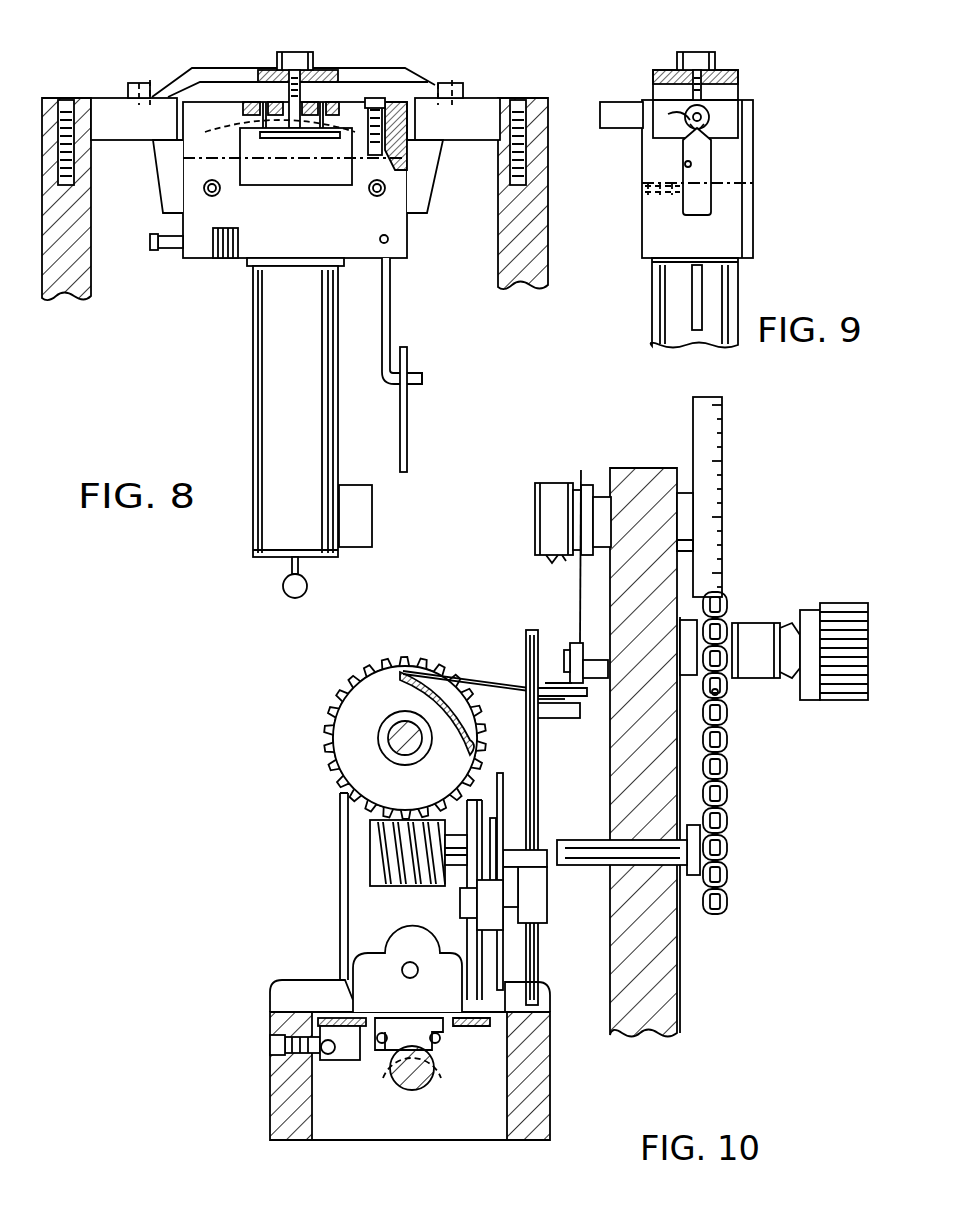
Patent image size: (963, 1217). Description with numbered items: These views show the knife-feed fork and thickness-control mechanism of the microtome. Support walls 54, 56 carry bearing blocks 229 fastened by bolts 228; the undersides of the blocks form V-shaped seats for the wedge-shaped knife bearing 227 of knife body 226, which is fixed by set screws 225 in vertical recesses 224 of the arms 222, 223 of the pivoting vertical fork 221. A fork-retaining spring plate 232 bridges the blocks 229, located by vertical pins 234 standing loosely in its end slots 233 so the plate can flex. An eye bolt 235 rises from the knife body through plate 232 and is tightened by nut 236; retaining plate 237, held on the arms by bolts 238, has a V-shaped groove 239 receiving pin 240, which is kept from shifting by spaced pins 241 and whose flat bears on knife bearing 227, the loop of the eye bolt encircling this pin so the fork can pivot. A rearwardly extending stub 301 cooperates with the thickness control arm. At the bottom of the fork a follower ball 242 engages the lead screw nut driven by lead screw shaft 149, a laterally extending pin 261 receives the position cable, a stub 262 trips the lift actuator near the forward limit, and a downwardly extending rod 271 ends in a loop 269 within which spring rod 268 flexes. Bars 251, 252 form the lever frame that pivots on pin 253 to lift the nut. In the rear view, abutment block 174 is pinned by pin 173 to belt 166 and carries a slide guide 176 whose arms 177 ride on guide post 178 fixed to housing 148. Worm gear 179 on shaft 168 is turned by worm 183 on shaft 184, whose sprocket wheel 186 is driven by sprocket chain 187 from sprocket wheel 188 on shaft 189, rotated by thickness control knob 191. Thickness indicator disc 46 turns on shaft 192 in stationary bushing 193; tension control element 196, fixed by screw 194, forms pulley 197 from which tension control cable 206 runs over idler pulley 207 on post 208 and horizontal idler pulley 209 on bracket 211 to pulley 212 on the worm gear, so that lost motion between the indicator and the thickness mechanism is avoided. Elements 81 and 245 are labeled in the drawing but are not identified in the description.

In FIG. 10, the thickness indicator disc 46 is at (718, 442).
In FIG. 8, the support wall 54 is at (80, 208).
In FIG. 10, the support wall 54 is at (675, 990).
In FIG. 8, the support wall 56 is at (535, 252).
In FIG. 10, the rod 81 is at (493, 818).
In FIG. 10, the housing 148 is at (282, 1075).
In FIG. 10, the lead screw shaft 149 is at (410, 1090).
In FIG. 10, the belt 166 is at (340, 835).
In FIG. 10, the shaft 168 is at (398, 742).
In FIG. 10, the pin 173 is at (460, 905).
In FIG. 10, the abutment block 174 is at (482, 922).
In FIG. 10, the slide guide 176 is at (520, 920).
In FIG. 10, the arms 177 is at (540, 867).
In FIG. 10, the vertical guide post 178 is at (540, 797).
In FIG. 10, the worm gear 179 is at (338, 690).
In FIG. 10, the worm 183 is at (400, 880).
In FIG. 10, the shaft 184 is at (598, 848).
In FIG. 10, the sprocket wheel 186 is at (715, 840).
In FIG. 10, the sprocket chain 187 is at (728, 760).
In FIG. 10, the sprocket wheel 188 is at (718, 693).
In FIG. 10, the shaft 189 is at (760, 625).
In FIG. 10, the thickness control knob 191 is at (840, 605).
In FIG. 10, the shaft 192 is at (686, 493).
In FIG. 10, the stationary bushing 193 is at (693, 545).
In FIG. 10, the screw 194 is at (548, 562).
In FIG. 10, the tension control element 196 is at (545, 506).
In FIG. 10, the pulley 197 is at (588, 485).
In FIG. 10, the tension control cable 206 is at (470, 678).
In FIG. 10, the idler pulley 207 is at (572, 648).
In FIG. 10, the post 208 is at (594, 660).
In FIG. 10, the horizontal idler pulley 209 is at (586, 703).
In FIG. 10, the bracket 211 is at (548, 712).
In FIG. 10, the pulley 212 is at (435, 672).
In FIG. 8, the vertical fork 221 is at (265, 345).
In FIG. 9, the vertical fork 221 is at (728, 285).
In FIG. 8, the arm 222 is at (180, 200).
In FIG. 8, the arm 223 is at (405, 212).
In FIG. 9, the arm 223 is at (745, 228).
In FIG. 9, the vertical recesses 224 is at (686, 165).
In FIG. 8, the set screws 225 is at (220, 195).
In FIG. 9, the set screws 225 is at (655, 200).
In FIG. 8, the knife body 226 is at (432, 160).
In FIG. 9, the knife body 226 is at (700, 174).
In FIG. 9, the knife bearing 227 is at (692, 130).
In FIG. 8, the bolts 228 is at (60, 130).
In FIG. 8, the bearing blocks 229 is at (95, 108).
In FIG. 8, the fork-retaining spring plate 232 is at (180, 70).
In FIG. 9, the fork-retaining spring plate 232 is at (660, 70).
In FIG. 8, the slots 233 is at (145, 92).
In FIG. 8, the vertical pins 234 is at (130, 100).
In FIG. 8, the eye bolt 235 is at (290, 147).
In FIG. 9, the eye bolt 235 is at (685, 125).
In FIG. 8, the nut 236 is at (292, 52).
In FIG. 9, the nut 236 is at (703, 52).
In FIG. 8, the retaining plate 237 is at (230, 102).
In FIG. 9, the retaining plate 237 is at (748, 100).
In FIG. 8, the bolts 238 is at (378, 100).
In FIG. 8, the V-shaped groove 239 is at (250, 130).
In FIG. 9, the V-shaped groove 239 is at (709, 115).
In FIG. 8, the pin 240 is at (312, 132).
In FIG. 9, the pin 240 is at (705, 122).
In FIG. 8, the spaced pins 241 is at (258, 102).
In FIG. 8, the follower ball 242 is at (308, 588).
In FIG. 10, the screws 245 is at (380, 1050).
In FIG. 10, the longitudinal bar 251 is at (455, 1010).
In FIG. 10, the longitudinal bar 252 is at (352, 1018).
In FIG. 10, the longitudinal pivot pin 253 is at (328, 1054).
In FIG. 8, the laterally extending pin 261 is at (175, 250).
In FIG. 8, the laterally extending stub 262 is at (365, 528).
In FIG. 8, the spring rod 268 is at (400, 438).
In FIG. 10, the spring rod 268 is at (500, 773).
In FIG. 8, the loop 269 is at (424, 378).
In FIG. 8, the rod 271 is at (392, 323).
In FIG. 9, the rod 271 is at (692, 300).
In FIG. 9, the stub 301 is at (625, 104).